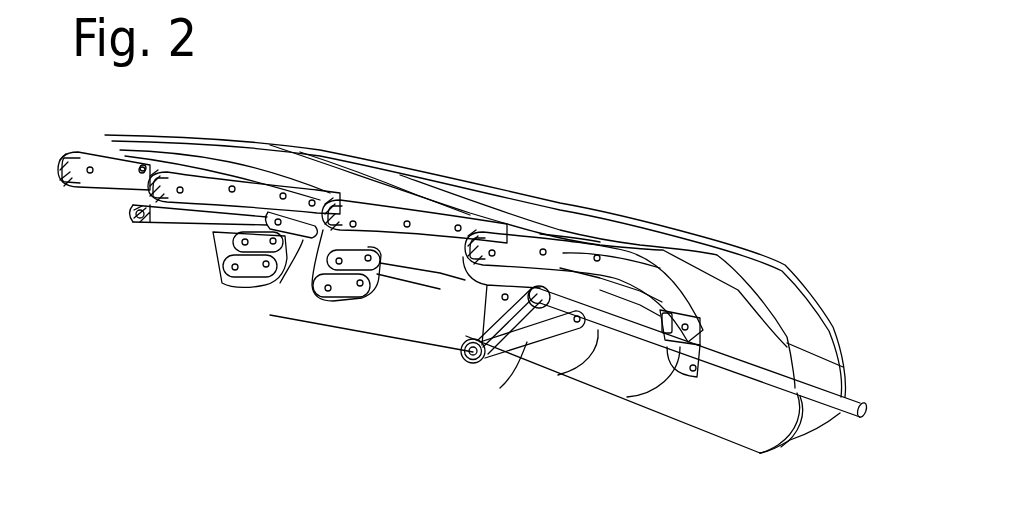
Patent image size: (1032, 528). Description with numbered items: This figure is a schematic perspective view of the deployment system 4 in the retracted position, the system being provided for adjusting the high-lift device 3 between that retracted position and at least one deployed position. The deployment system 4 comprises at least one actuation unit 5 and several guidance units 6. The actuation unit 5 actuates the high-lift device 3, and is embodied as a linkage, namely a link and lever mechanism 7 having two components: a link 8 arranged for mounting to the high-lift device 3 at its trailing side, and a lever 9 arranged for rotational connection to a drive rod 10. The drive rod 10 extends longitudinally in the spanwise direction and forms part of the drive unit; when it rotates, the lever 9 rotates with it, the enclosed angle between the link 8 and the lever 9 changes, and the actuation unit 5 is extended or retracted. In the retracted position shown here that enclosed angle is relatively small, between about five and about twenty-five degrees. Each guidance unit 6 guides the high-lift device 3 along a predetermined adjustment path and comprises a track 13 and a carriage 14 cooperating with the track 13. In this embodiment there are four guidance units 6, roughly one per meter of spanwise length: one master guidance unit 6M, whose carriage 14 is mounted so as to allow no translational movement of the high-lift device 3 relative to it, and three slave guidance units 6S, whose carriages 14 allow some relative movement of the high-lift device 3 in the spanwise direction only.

The high-lift device 3 is at (796, 312).
The deployment system 4 is at (175, 280).
The actuation unit 5 is at (136, 214).
The guidance unit 6 is at (190, 188).
The slave guidance unit 6S is at (343, 288).
The master guidance unit 6M is at (697, 368).
The link and lever mechanism 7 is at (167, 230).
The link 8 is at (520, 335).
The lever 9 is at (497, 272).
The drive rod 10 is at (838, 400).
The track 13 is at (563, 253).
The carriage 14 is at (547, 233).